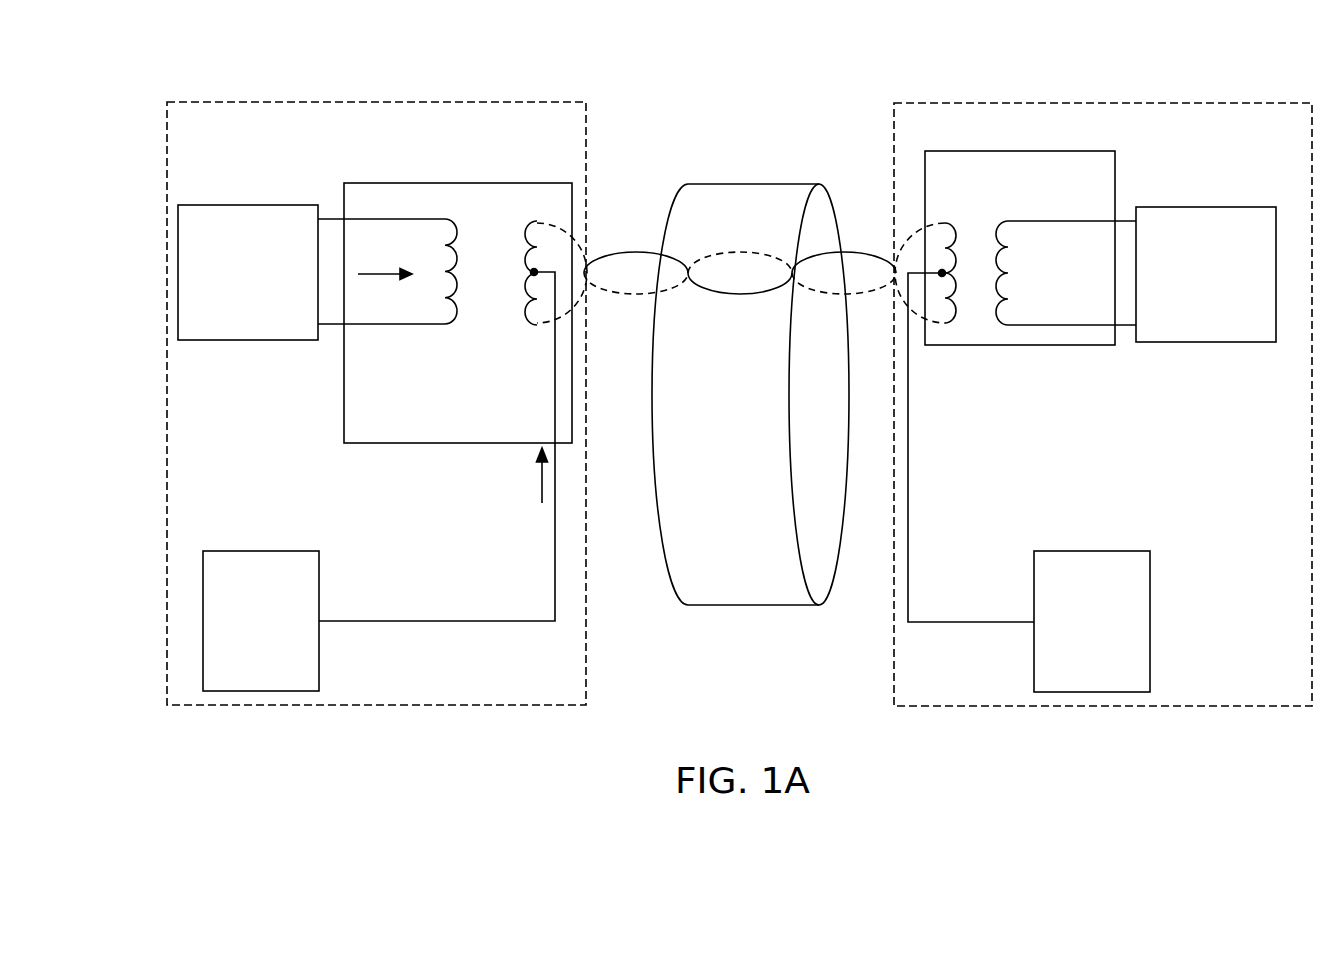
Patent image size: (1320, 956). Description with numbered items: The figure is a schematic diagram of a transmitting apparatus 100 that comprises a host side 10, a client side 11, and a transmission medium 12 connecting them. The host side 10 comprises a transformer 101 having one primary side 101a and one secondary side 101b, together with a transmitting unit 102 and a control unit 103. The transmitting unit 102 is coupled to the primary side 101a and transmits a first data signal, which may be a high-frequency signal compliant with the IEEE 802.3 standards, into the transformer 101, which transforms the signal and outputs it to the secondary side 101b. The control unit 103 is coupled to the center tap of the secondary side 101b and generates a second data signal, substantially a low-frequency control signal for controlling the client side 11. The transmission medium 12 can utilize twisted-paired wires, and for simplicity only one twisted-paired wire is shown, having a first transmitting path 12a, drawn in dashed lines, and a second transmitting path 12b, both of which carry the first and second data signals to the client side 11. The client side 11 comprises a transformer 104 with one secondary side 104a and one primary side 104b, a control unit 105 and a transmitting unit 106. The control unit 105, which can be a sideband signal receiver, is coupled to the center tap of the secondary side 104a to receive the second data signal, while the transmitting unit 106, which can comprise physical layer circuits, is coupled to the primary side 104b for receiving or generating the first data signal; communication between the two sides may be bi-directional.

The transmitting apparatus 100 is at (221, 58).
The host side 10 is at (378, 102).
The client side 11 is at (1100, 103).
The transmission medium 12 is at (740, 184).
The first transmitting path 12a is at (745, 252).
The second transmitting path 12b is at (717, 295).
The transformer 101 is at (458, 183).
The primary side 101a is at (413, 325).
The secondary side 101b is at (525, 325).
The transmitting unit 102 is at (262, 205).
The control unit 103 is at (258, 551).
The transformer 104 is at (1015, 151).
The secondary side 104a is at (946, 237).
The primary side 104b is at (1037, 235).
The control unit 105 is at (1090, 551).
The transmitting unit 106 is at (1193, 207).